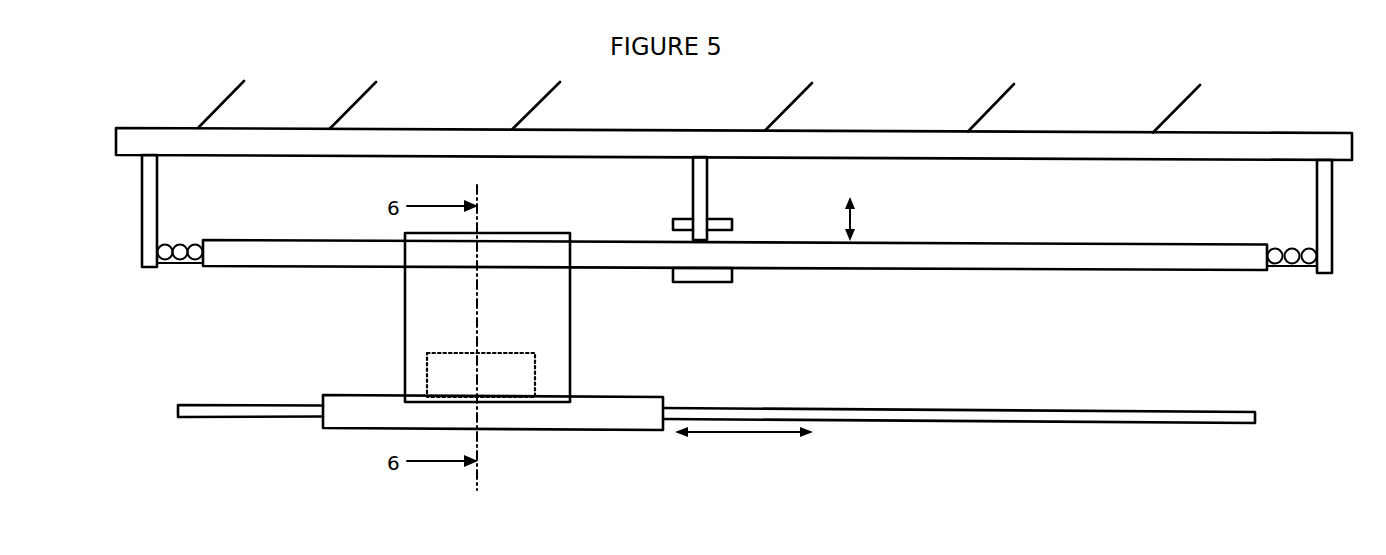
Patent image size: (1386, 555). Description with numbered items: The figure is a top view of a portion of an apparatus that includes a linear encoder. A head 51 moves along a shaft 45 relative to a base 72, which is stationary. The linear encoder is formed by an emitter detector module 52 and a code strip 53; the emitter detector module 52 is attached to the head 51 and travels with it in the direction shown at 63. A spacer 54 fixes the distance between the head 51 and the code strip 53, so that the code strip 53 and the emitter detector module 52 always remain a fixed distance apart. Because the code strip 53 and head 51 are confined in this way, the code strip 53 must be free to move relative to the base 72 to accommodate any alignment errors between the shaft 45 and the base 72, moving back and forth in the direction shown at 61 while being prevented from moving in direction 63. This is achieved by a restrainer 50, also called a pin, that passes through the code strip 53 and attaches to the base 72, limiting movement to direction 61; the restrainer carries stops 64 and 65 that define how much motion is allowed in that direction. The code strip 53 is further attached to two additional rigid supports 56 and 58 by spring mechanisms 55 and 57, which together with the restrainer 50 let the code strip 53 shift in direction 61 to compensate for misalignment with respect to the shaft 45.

The base 72 is at (1285, 133).
The ridged support 56 is at (150, 210).
The spring mechanism 55 is at (172, 264).
The code strip 53 is at (1248, 271).
The spacer 54 is at (405, 323).
The emitter detector module 52 is at (523, 371).
The head 51 is at (632, 431).
The shaft 45 is at (1135, 418).
The restrainer 50 is at (707, 197).
The stop 65 is at (687, 225).
The stop 64 is at (702, 278).
The direction of code strip motion 61 is at (852, 220).
The direction of head motion 63 is at (750, 438).
The ridged support 58 is at (1317, 183).
The spring mechanism 57 is at (1282, 271).